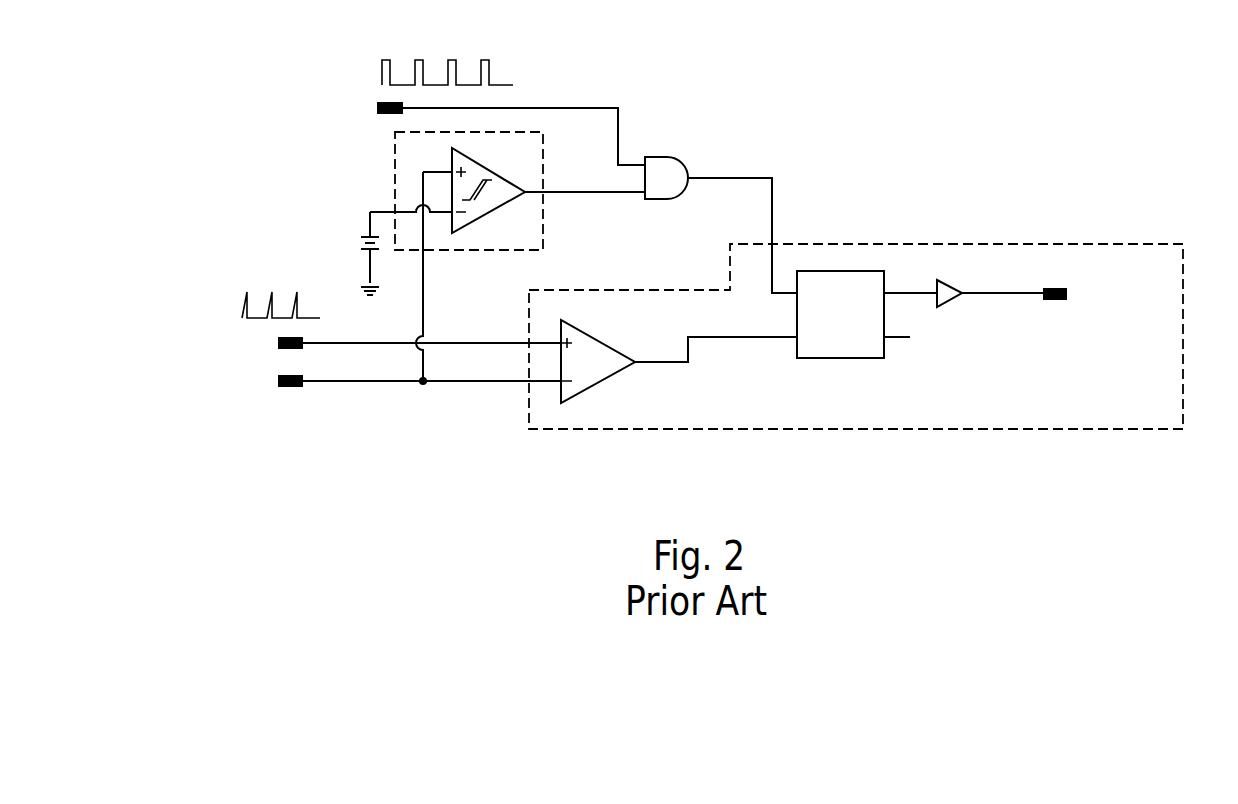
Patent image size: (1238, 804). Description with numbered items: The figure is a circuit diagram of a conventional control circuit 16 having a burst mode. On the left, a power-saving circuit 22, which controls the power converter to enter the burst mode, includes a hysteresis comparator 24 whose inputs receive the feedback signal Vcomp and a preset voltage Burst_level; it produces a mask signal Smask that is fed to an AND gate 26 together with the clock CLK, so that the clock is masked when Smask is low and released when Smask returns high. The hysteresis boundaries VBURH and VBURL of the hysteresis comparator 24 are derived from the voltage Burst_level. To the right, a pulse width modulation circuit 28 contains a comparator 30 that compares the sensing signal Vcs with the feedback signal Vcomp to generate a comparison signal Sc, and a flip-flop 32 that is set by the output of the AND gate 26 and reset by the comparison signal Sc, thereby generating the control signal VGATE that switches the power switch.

The control circuit 16 is at (1113, 108).
The power-saving circuit 22 is at (395, 160).
The hysteresis comparator 24 is at (488, 170).
The AND gate 26 is at (662, 157).
The pulse width modulation (PWM) circuit 28 is at (935, 244).
The comparator 30 is at (598, 340).
The flip-flop 32 is at (838, 358).